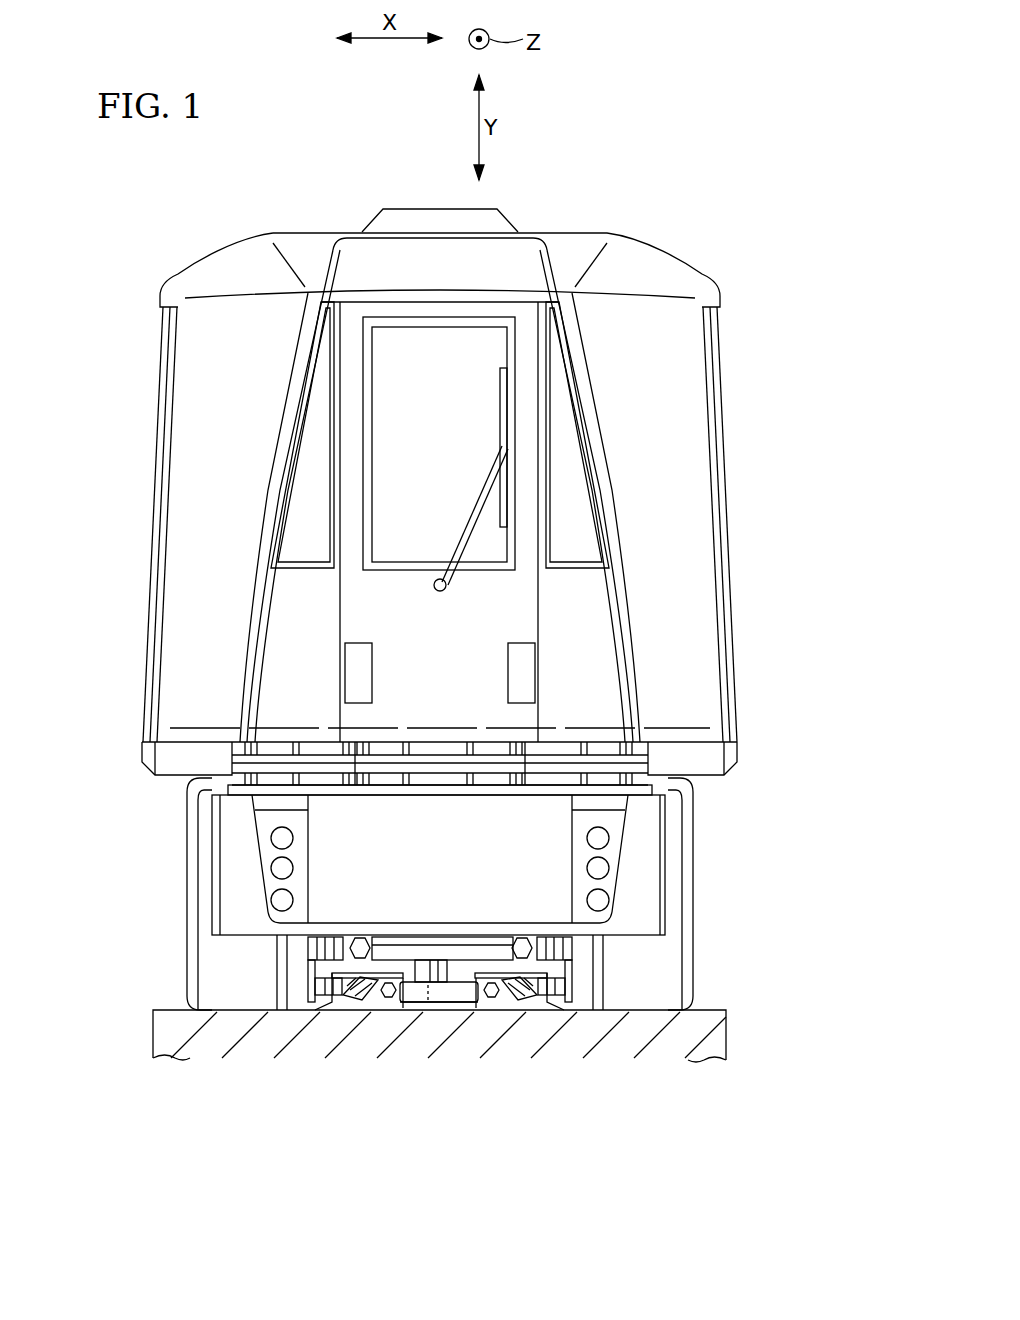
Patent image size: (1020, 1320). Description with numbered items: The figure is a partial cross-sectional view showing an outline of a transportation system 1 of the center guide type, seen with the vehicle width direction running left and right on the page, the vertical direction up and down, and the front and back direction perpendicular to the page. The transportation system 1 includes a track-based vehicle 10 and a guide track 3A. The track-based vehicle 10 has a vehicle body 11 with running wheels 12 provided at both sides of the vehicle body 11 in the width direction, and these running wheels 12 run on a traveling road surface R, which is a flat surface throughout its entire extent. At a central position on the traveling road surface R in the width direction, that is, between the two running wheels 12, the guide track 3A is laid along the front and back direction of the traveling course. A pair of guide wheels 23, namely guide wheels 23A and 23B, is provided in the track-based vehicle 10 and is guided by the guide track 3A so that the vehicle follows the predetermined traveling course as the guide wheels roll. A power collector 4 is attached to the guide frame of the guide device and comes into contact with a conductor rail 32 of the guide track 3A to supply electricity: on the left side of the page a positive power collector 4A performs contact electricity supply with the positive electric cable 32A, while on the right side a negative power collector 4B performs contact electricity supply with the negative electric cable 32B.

The transportation system 1 is at (759, 297).
The track-based vehicle 10 is at (728, 446).
The vehicle body 11 is at (692, 578).
The running wheels 12 is at (186, 905).
The guide wheels 23 is at (500, 1127).
The guide wheel 23A is at (452, 998).
The guide wheel 23B is at (418, 1000).
The guide track 3A is at (486, 1016).
The power collector 4 is at (433, 1067).
The positive power collector 4A is at (307, 1013).
The negative power collector 4B is at (570, 1013).
The conductor rail 32 is at (447, 1067).
The positive electric cable 32A is at (343, 997).
The negative electric cable 32B is at (535, 997).
The traveling road surface R is at (712, 1004).